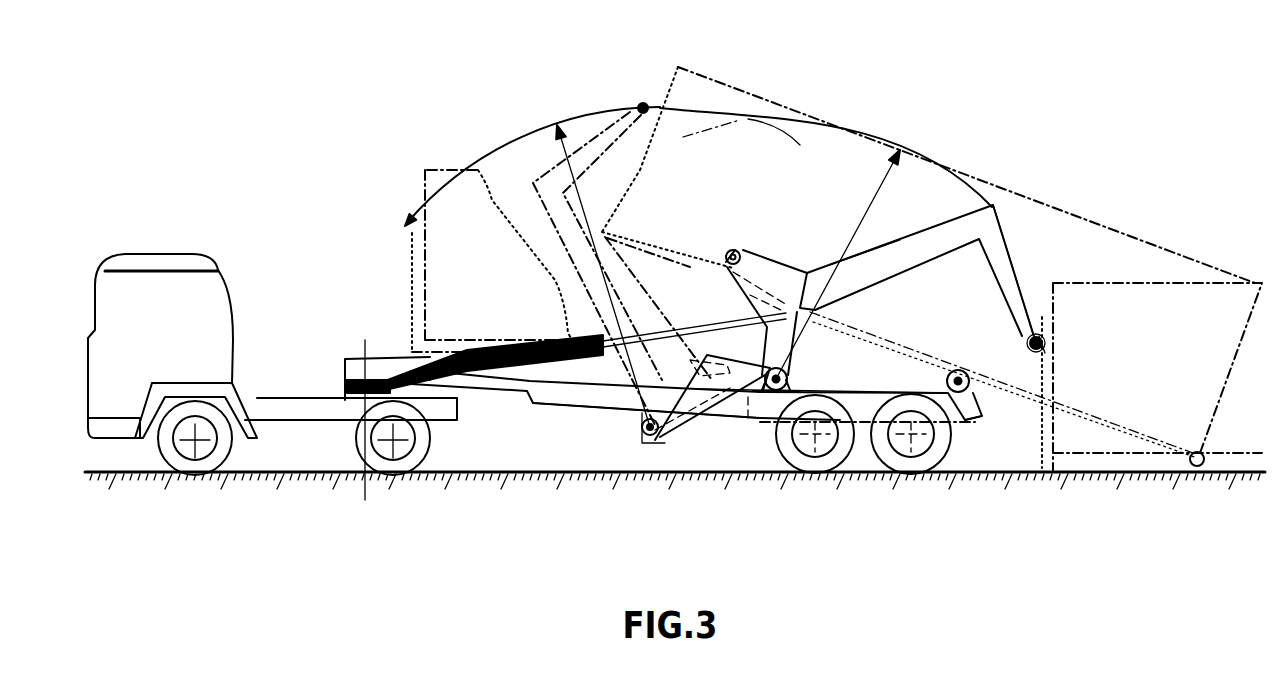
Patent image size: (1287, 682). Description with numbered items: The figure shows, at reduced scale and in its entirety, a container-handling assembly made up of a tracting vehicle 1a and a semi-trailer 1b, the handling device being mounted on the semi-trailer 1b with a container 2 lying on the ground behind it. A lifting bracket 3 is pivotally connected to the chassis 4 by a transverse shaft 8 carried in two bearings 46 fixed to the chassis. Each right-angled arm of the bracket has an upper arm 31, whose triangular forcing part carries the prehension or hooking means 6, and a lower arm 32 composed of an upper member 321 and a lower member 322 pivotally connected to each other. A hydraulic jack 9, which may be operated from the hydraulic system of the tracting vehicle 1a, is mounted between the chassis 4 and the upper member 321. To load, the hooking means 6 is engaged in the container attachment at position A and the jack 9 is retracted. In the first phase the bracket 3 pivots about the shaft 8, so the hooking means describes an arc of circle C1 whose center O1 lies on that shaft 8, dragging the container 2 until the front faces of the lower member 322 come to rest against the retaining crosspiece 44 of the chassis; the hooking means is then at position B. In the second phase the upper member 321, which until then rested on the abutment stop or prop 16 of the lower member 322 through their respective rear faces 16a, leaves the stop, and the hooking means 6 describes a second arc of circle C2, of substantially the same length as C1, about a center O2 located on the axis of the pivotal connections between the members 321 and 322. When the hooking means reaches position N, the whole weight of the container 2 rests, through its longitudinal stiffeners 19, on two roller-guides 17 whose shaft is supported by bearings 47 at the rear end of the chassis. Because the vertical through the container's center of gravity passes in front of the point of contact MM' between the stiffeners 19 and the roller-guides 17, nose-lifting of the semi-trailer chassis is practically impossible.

The tracting vehicle 1a is at (265, 407).
The semi-trailer 1b is at (575, 405).
The container 2 is at (450, 195).
The lifting bracket 3 is at (1000, 208).
The upper arm 31 is at (1003, 272).
The lower arm 32 is at (800, 340).
The upper member 321 is at (900, 250).
The lower member 322 is at (742, 307).
The chassis 4 is at (365, 350).
The prehension or hooking means 6 is at (640, 105).
The shaft 8 is at (730, 405).
The hydraulic jack 9 is at (502, 392).
The abutment stop or prop 16 is at (827, 328).
The rear faces 16a is at (738, 250).
The roller-guides 17 is at (968, 421).
The longitudinal stiffeners 19 is at (647, 237).
The retaining crosspiece 44 is at (717, 407).
The bearings 46 is at (752, 400).
The bearings 47 is at (950, 422).
The center of arc of circle C1 O1 is at (787, 380).
The center of arc of circle C2 O2 is at (652, 440).
The position A is at (1028, 344).
The position B is at (746, 122).
The position N is at (647, 105).
The point of contact MM' is at (965, 367).
The arc of circle C1 is at (857, 130).
The arc of circle C2 is at (547, 123).